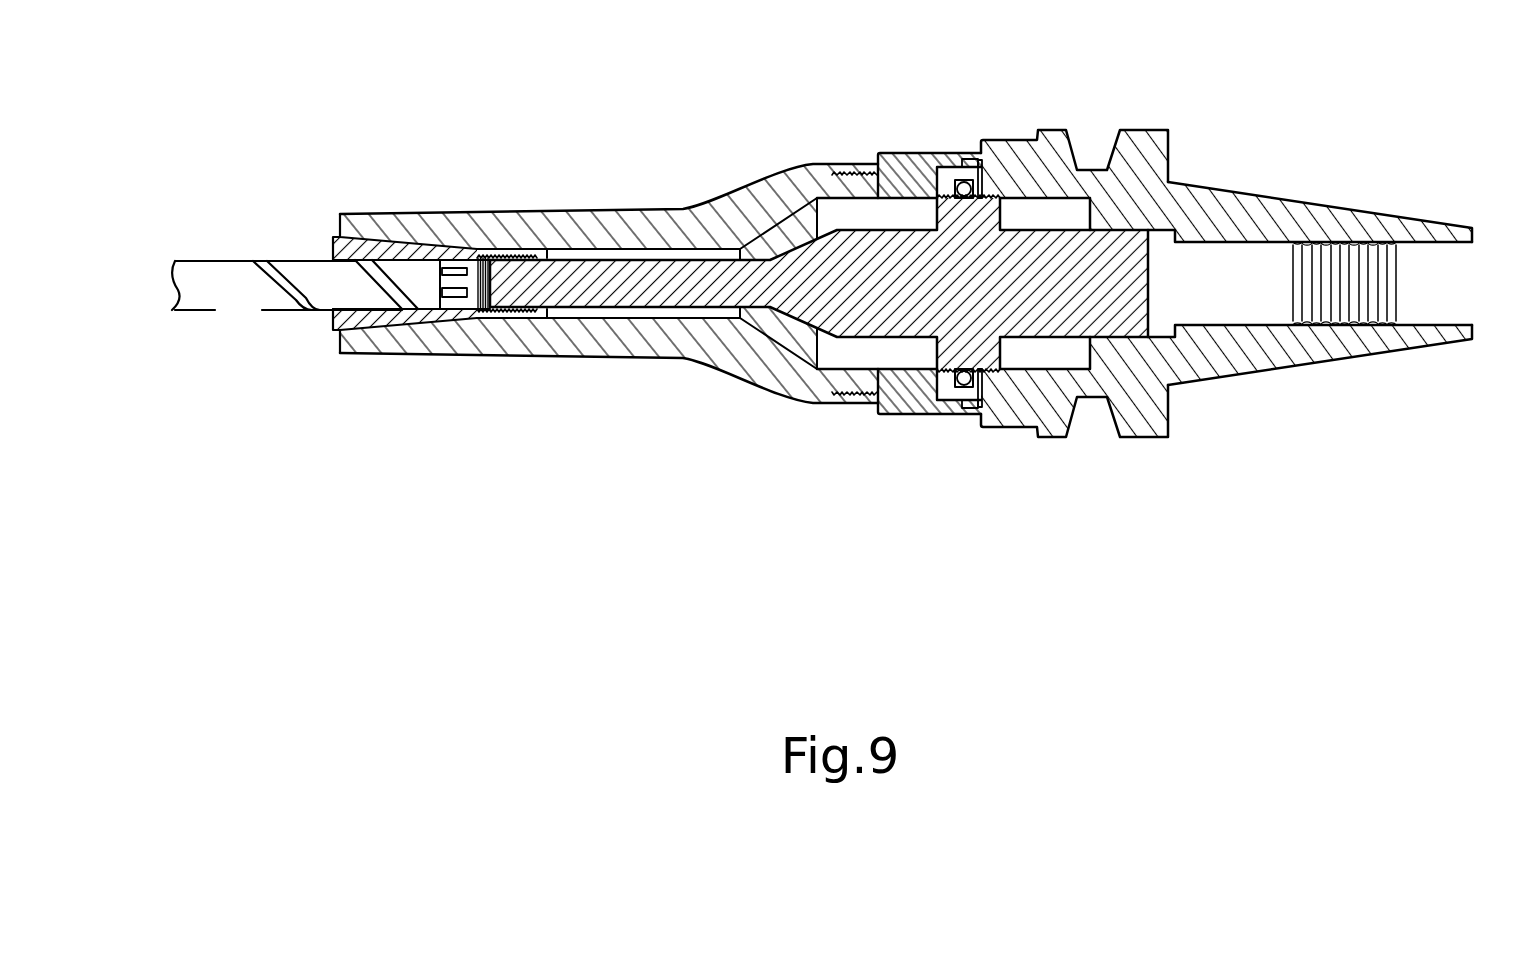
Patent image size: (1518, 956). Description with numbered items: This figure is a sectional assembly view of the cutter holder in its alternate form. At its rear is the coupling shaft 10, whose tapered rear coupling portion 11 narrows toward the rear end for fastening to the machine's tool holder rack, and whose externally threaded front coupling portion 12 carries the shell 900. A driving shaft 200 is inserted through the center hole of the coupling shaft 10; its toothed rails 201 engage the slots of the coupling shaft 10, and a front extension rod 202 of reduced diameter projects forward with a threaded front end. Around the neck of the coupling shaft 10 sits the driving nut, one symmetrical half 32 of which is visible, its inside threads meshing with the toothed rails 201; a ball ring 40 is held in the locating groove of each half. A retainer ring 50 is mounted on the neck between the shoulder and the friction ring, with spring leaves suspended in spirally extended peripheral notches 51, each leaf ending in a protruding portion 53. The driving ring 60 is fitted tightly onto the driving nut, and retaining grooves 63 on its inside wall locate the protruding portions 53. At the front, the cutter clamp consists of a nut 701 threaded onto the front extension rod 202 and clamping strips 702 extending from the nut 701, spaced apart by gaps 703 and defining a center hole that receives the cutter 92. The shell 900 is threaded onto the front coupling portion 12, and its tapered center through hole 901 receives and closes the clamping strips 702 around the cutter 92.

The coupling shaft 10 is at (1145, 124).
The tapered rear coupling portion 11 is at (1348, 346).
The externally threaded front coupling portion 12 is at (838, 168).
The symmetrical half of driving nut 32 is at (941, 392).
The ball ring 40 is at (949, 383).
The retainer ring 50 is at (1000, 348).
The spirally extended peripheral notches 51 is at (978, 395).
The protruding portion 53 is at (981, 160).
The driving ring 60 is at (919, 152).
The retaining grooves 63 is at (968, 160).
The cutter 92 is at (232, 313).
The driving shaft 200 is at (1137, 287).
The toothed rails 201 is at (1017, 353).
The front extension rod 202 is at (612, 260).
The nut 701 is at (521, 249).
The clamping strips 702 is at (408, 248).
The gaps 703 is at (455, 298).
The shell 900 is at (634, 358).
The tapered center through hole 901 is at (381, 232).